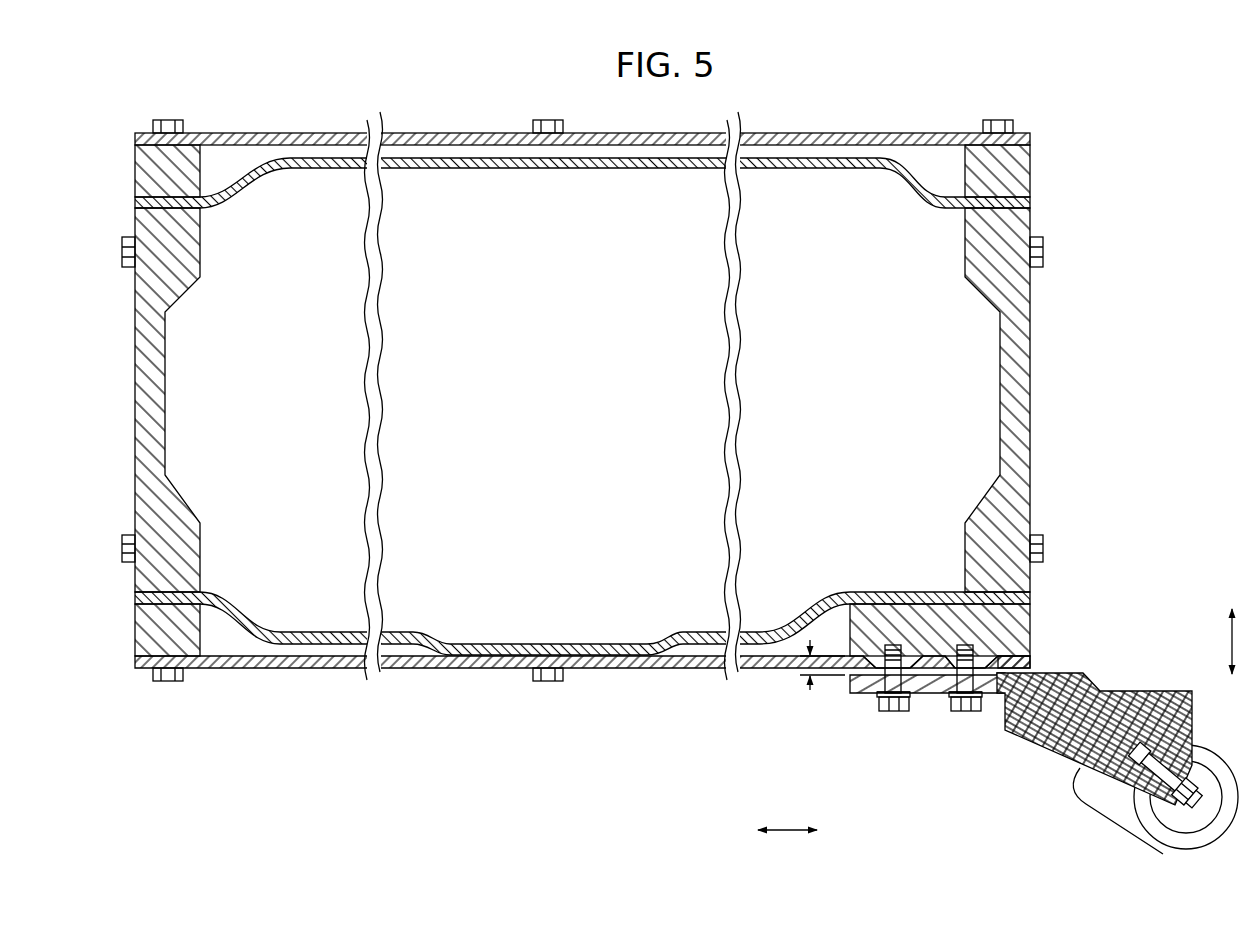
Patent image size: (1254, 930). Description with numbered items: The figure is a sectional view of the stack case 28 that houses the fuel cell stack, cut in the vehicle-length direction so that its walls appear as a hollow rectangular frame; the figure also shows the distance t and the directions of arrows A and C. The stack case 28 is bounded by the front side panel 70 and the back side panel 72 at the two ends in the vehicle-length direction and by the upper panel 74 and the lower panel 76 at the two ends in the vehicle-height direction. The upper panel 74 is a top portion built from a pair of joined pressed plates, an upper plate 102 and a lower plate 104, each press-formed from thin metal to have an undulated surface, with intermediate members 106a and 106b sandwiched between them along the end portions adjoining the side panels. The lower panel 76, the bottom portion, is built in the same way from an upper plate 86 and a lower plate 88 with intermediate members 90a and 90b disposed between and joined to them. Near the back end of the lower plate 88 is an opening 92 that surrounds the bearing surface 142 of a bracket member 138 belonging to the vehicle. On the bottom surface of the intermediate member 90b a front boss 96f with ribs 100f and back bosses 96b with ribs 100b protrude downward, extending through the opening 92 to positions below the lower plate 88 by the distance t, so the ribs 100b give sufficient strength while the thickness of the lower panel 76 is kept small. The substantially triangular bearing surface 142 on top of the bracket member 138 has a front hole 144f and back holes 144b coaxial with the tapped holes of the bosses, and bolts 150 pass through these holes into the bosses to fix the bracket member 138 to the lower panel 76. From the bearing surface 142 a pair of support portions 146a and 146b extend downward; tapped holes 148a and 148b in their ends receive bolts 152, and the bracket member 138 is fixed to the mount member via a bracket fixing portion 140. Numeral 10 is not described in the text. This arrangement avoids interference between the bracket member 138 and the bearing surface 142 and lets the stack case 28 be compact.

The battery pack 10 is at (1194, 194).
The stack case 28 is at (1160, 194).
The front side panel 70 is at (133, 331).
The back side panel 72 is at (1033, 333).
The upper panel 74 is at (607, 122).
The lower panel 76 is at (604, 664).
The upper plate 86 is at (563, 650).
The lower plate 88 is at (700, 667).
The intermediate member 90a is at (145, 627).
The intermediate member 90b is at (1008, 645).
The opening 92 is at (987, 657).
The front boss 96f is at (885, 673).
The back boss 96b is at (967, 673).
The ribs 100f is at (848, 688).
The ribs 100b is at (927, 655).
The upper plate 102 is at (848, 133).
The lower plate 104 is at (796, 161).
The intermediate member 106a is at (140, 168).
The intermediate member 106b is at (1013, 177).
The bracket member 138 is at (1045, 765).
The bracket fixing portion 140 is at (1150, 833).
The bearing surface 142 is at (952, 675).
The front hole 144f is at (897, 711).
The back hole 144b is at (968, 711).
The support portion 146a is at (1101, 705).
The support portion 146b is at (1112, 707).
The tapped hole 148a is at (1172, 721).
The tapped hole 148b is at (1153, 757).
The bolts 150 is at (965, 702).
The bolts 152 is at (1210, 797).